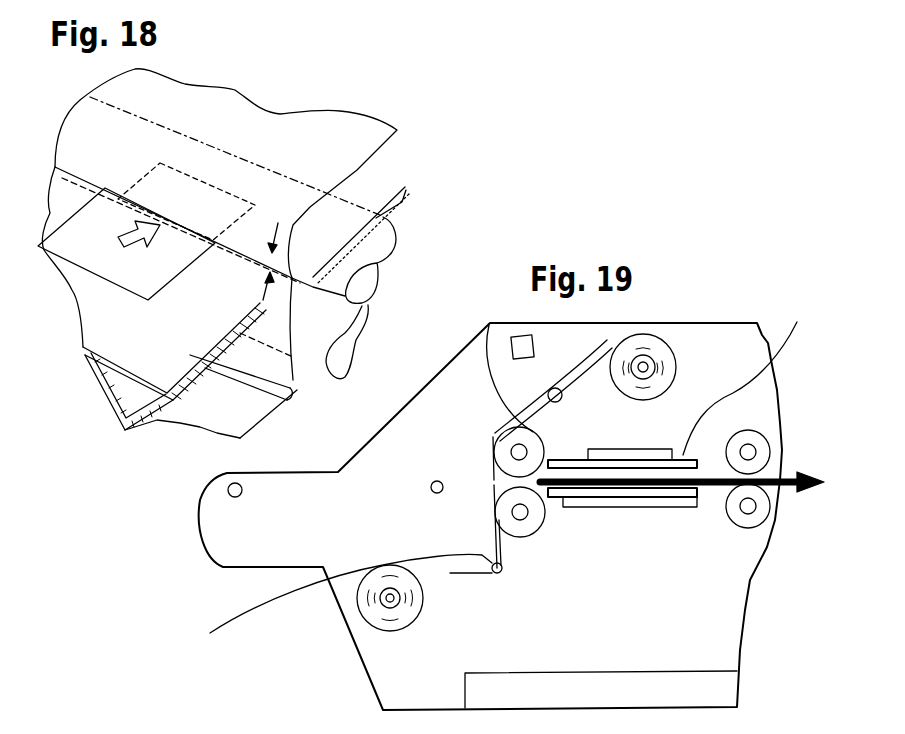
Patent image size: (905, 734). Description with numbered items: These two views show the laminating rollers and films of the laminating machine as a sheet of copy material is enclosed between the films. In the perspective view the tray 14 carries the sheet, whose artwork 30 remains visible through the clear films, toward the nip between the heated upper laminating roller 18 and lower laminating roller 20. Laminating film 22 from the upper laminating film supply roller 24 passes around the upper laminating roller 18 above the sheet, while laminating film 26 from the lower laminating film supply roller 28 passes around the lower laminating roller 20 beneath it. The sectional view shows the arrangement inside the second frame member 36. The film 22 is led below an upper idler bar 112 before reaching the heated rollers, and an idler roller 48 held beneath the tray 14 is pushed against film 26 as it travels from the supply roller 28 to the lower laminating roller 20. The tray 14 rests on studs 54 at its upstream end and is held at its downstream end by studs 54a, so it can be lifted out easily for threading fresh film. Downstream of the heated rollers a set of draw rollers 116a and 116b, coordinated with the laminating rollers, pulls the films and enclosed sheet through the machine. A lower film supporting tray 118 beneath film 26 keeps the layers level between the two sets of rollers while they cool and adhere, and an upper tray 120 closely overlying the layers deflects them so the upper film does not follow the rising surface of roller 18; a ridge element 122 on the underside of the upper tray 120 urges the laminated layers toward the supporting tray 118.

In FIG. 18, the tray 14 is at (138, 393).
In FIG. 18, the upper laminating roller 18 is at (368, 282).
In FIG. 19, the upper laminating roller 18 is at (530, 445).
In FIG. 18, the lower laminating roller 20 is at (348, 365).
In FIG. 19, the lower laminating roller 20 is at (533, 528).
In FIG. 18, the laminating film 22 is at (373, 193).
In FIG. 19, the laminating film 22 is at (492, 322).
In FIG. 19, the upper laminating film supply roller 24 is at (647, 352).
In FIG. 18, the laminating film 26 is at (260, 412).
In FIG. 19, the laminating film 26 is at (465, 578).
In FIG. 19, the lower laminating film supply roller 28 is at (363, 618).
In FIG. 18, the artwork 30 is at (82, 240).
In FIG. 19, the second frame member 36 is at (392, 675).
In FIG. 19, the idler roller 48 is at (210, 633).
In FIG. 19, the stud 54 is at (228, 492).
In FIG. 19, the stud 54a is at (438, 481).
In FIG. 19, the upper idler bar 112 is at (607, 340).
In FIG. 19, the draw roller 116a is at (757, 440).
In FIG. 19, the draw roller 116b is at (760, 520).
In FIG. 19, the lower film supporting tray 118 is at (653, 507).
In FIG. 19, the upper tray 120 is at (602, 448).
In FIG. 19, the ridge element 122 is at (767, 373).